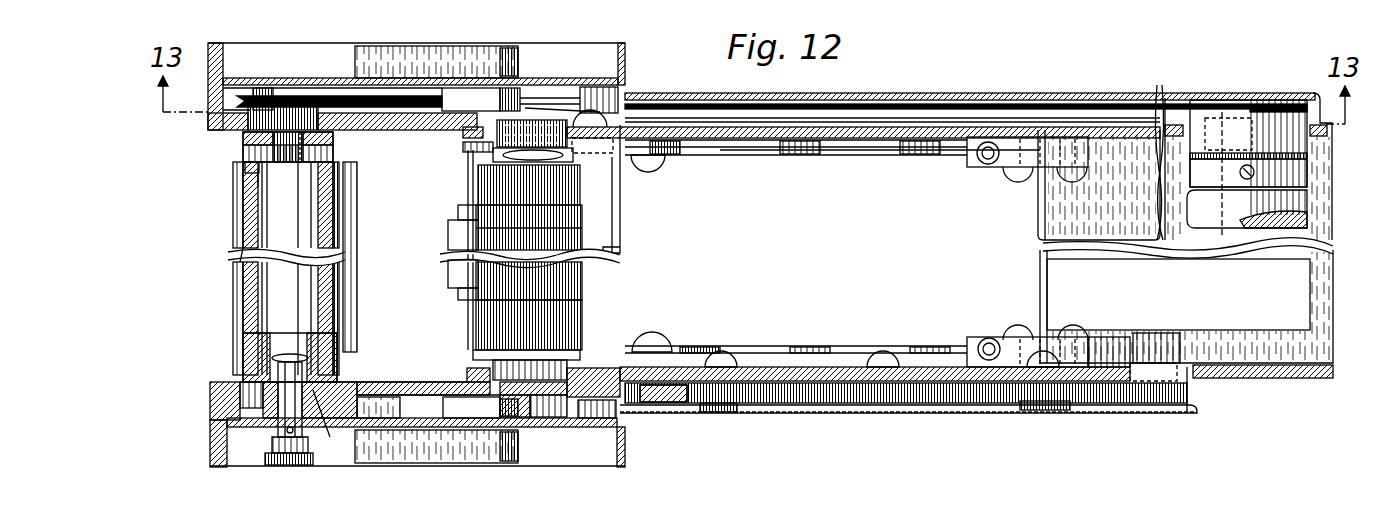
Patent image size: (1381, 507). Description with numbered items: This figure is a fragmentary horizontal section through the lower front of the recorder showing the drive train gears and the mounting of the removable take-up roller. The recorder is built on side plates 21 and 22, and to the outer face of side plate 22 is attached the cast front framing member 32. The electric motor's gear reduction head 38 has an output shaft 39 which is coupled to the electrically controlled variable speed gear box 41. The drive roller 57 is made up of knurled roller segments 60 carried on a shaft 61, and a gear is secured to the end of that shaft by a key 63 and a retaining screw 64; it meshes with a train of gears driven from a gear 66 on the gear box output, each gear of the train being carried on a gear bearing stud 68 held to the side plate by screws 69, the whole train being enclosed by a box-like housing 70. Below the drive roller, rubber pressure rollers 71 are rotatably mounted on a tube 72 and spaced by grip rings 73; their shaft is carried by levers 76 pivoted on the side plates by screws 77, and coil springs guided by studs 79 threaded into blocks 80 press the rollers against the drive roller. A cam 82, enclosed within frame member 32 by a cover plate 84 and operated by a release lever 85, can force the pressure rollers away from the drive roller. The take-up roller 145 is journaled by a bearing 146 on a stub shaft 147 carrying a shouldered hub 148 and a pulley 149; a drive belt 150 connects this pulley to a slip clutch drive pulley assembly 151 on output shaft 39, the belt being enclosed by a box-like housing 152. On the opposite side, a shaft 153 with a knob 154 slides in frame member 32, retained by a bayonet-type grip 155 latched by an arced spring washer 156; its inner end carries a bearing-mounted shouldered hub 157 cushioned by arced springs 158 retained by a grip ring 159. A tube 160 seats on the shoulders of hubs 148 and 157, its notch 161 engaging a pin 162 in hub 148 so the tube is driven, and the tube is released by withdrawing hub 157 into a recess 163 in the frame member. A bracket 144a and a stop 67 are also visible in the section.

The side plate 21 is at (780, 137).
The side plate 22 is at (815, 367).
The front framing member 32 is at (210, 402).
The gear reduction head 38 is at (1285, 232).
The output shaft 39 is at (1225, 227).
The variable speed gear box 41 is at (1258, 334).
The drive roller 57 is at (600, 276).
The roller segments 60 is at (585, 327).
The shaft 61 is at (548, 224).
The key 63 is at (535, 408).
The retaining screw 64 is at (512, 412).
The gear 66 is at (1162, 410).
The stop 67 is at (1150, 354).
The gear bearing stud 68 is at (705, 410).
The screws 69 is at (618, 350).
The box-like housing 70 is at (1098, 414).
The pressure rollers 71 is at (458, 264).
The tube 72 is at (468, 184).
The grip rings 73 is at (458, 214).
The levers 76 is at (722, 152).
The screws 77 is at (655, 168).
The studs 79 is at (982, 162).
The blocks 80 is at (1036, 172).
The cam 82 is at (460, 100).
The cover plate 84 is at (592, 90).
The release lever 85 is at (398, 60).
The bracket 144a is at (1062, 226).
The take-up roller 145 is at (227, 228).
The bearing 146 is at (208, 124).
The stub shaft 147 is at (250, 142).
The shouldered hub 148 is at (335, 145).
The pulley 149 is at (328, 104).
The drive belt 150 is at (245, 104).
The slip clutch drive pulley assembly 151 is at (1195, 122).
The box-like housing 152 is at (905, 98).
The shaft 153 is at (282, 394).
The knob 154 is at (290, 467).
The bayonet-type grip 155 is at (276, 436).
The arced spring washer 156 is at (276, 448).
The shouldered hub 157 is at (245, 358).
The arced springs 158 is at (312, 362).
The grip ring 159 is at (358, 412).
The tube 160 is at (240, 256).
The notch 161 is at (256, 180).
The pin 162 is at (244, 167).
The recess 163 is at (332, 430).